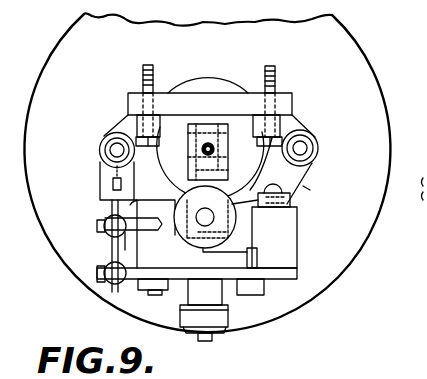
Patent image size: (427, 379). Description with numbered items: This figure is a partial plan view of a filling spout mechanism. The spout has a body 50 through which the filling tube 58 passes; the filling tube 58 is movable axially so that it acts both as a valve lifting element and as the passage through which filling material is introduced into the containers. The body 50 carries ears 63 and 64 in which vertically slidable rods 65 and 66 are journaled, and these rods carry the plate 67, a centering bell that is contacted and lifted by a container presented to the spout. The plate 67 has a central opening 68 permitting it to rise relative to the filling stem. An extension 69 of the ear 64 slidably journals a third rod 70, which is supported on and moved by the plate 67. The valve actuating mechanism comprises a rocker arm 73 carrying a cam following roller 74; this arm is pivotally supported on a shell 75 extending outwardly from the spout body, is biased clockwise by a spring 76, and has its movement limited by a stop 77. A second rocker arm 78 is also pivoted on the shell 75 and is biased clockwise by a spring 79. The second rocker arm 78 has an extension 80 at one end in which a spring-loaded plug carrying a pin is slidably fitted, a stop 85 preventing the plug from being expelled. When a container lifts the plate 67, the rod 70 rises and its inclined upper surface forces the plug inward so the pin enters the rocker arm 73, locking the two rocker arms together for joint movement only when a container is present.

The body 50 is at (180, 100).
The filling tube 58 is at (207, 143).
The ear 63 is at (103, 139).
The ear 64 is at (316, 137).
The rod 65 is at (114, 152).
The rod 66 is at (302, 152).
The plate 67 is at (357, 63).
The opening 68 is at (226, 93).
The extension 69 is at (304, 190).
The third rod 70 is at (305, 176).
The rocker arm 73 is at (164, 276).
The cam following roller 74 is at (231, 325).
The shell 75 is at (148, 292).
The spring 76 is at (107, 284).
The stop 77 is at (258, 258).
The second rocker arm 78 is at (143, 247).
The spring 79 is at (110, 216).
The extension 80 is at (298, 222).
The stop 85 is at (267, 284).